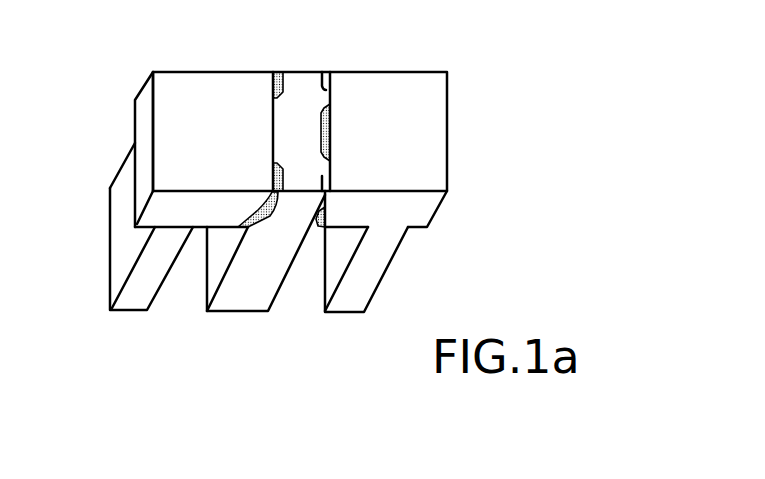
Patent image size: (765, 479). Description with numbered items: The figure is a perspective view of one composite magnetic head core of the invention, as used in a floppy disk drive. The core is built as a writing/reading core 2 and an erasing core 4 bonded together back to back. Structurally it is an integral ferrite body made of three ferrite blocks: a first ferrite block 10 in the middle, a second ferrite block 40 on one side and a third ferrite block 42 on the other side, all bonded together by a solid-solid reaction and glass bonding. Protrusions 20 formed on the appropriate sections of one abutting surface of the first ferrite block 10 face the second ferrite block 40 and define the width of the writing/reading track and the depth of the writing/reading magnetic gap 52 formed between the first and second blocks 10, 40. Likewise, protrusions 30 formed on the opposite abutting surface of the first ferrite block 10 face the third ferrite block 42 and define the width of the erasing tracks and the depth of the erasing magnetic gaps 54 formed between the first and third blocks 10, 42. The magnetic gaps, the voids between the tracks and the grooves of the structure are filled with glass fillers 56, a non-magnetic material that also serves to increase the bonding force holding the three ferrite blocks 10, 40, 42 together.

The writing/reading core 2 is at (128, 63).
The erasing core 4 is at (435, 60).
The first ferrite block 10 is at (238, 300).
The protrusions 20 is at (275, 118).
The protrusions 30 is at (323, 72).
The second ferrite block 40 is at (132, 300).
The third ferrite block 42 is at (352, 300).
The writing/reading magnetic gap 52 is at (273, 130).
The erasing magnetic gap 54 is at (332, 84).
The glass fillers 56 is at (278, 72).